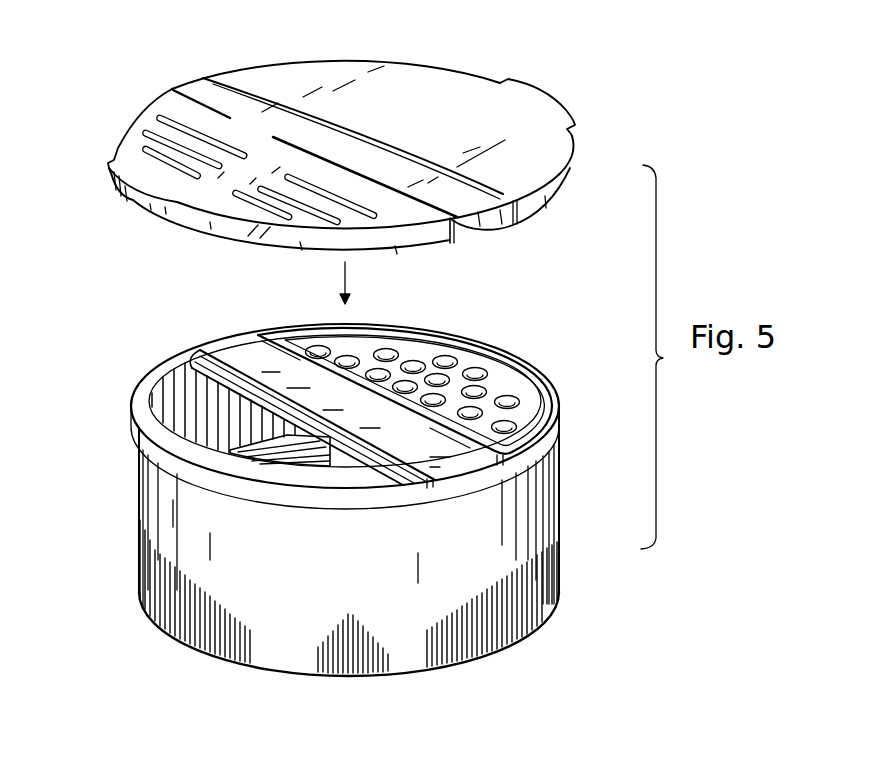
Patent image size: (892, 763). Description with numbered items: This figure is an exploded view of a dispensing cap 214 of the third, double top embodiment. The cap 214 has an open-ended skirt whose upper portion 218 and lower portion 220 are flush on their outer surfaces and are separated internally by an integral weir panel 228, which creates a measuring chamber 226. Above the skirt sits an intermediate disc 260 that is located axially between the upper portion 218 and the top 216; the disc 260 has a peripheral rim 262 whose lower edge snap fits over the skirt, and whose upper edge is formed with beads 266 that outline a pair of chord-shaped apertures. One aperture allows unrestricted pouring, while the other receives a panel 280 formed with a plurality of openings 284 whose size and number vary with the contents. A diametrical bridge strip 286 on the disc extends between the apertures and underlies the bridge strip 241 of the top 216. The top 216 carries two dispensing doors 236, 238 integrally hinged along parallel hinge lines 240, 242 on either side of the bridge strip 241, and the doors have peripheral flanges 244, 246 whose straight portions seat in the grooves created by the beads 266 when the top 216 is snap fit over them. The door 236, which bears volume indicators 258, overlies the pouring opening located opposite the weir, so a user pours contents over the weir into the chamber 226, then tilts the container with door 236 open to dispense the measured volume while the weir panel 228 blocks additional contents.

The cap 214 is at (130, 465).
The top 216 is at (431, 70).
The upper portion of skirt 218 is at (562, 474).
The lower portion of skirt 220 is at (555, 566).
The measuring chamber 226 is at (209, 419).
The weir panel 228 is at (289, 457).
The dispensing door 236 is at (148, 118).
The dispensing door 238 is at (302, 77).
The hinge line 240 is at (228, 114).
The bridge strip 241 is at (199, 92).
The hinge line 242 is at (363, 130).
The peripheral flange 244 is at (286, 246).
The peripheral flange 246 is at (545, 203).
The volume indicators 258 is at (250, 195).
The intermediate disc 260 is at (421, 503).
The peripheral rim 262 is at (384, 500).
The beads 266 is at (232, 463).
The panel 280 is at (527, 414).
The openings 284 is at (488, 388).
The bridge strip 286 is at (258, 367).